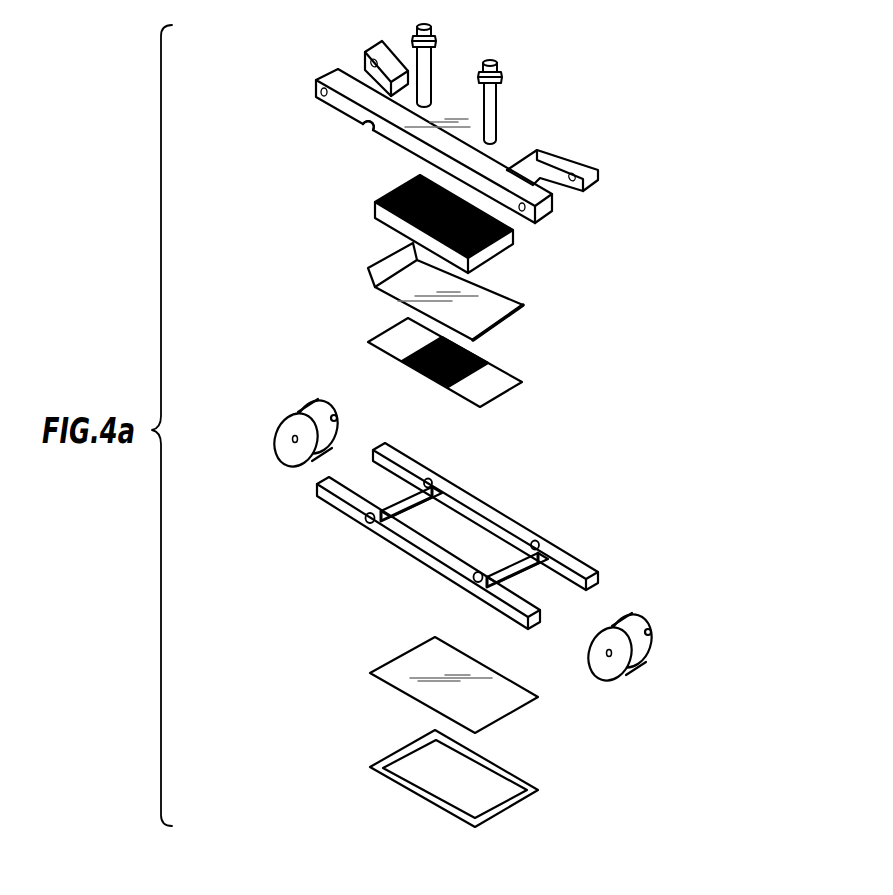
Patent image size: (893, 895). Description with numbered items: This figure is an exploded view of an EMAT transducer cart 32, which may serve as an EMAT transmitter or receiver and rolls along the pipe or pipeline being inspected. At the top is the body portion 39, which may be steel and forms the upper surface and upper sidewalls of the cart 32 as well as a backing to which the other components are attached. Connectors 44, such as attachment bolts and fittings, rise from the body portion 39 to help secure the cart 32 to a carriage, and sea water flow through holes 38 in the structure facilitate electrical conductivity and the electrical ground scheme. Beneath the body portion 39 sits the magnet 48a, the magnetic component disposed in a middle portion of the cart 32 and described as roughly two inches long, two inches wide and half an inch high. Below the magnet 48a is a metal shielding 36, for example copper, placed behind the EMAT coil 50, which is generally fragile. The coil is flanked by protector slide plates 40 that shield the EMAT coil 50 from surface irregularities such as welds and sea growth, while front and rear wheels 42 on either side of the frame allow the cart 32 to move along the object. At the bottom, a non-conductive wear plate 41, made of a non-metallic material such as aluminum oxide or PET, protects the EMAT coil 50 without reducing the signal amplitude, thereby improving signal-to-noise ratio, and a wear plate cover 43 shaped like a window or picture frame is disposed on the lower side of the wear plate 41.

The EMAT transducer cart 32 is at (622, 77).
The metal shielding 36 is at (513, 321).
The sea water flow through holes 38 is at (366, 124).
The body portion 39 is at (537, 128).
The protector slide plates 40 is at (580, 560).
The non-conductive wear plate 41 is at (530, 702).
The wheels 42 is at (275, 433).
The wear plate cover 43 is at (392, 778).
The connectors 44 is at (500, 76).
The magnet 48a is at (513, 252).
The EMAT coil 50 is at (513, 393).